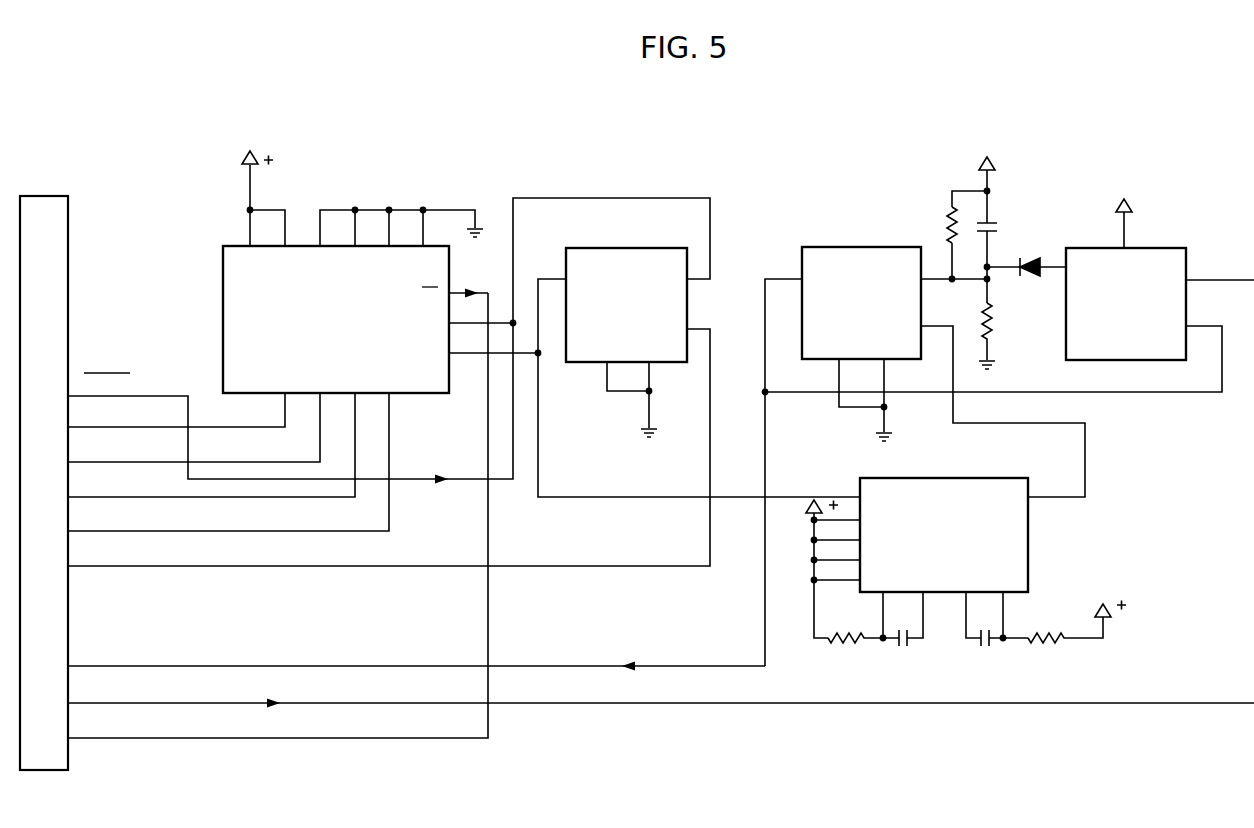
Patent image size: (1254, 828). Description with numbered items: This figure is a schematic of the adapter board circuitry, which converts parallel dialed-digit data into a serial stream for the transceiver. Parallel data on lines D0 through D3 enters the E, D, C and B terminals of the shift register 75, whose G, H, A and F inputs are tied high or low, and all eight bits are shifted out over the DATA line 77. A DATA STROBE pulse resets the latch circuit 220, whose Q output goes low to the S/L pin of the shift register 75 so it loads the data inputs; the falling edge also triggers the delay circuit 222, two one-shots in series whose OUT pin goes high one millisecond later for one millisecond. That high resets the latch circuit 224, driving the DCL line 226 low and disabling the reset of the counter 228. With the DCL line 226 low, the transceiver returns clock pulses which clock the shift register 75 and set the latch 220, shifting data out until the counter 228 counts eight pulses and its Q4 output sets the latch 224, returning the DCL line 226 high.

The shift register 75 is at (223, 324).
The DATA line 77 is at (350, 738).
The latch circuit 220 is at (632, 248).
The delay circuit 222 is at (1030, 551).
The latch circuit 224 is at (862, 247).
The DCL line 226 is at (677, 666).
The counter 228 is at (1163, 248).